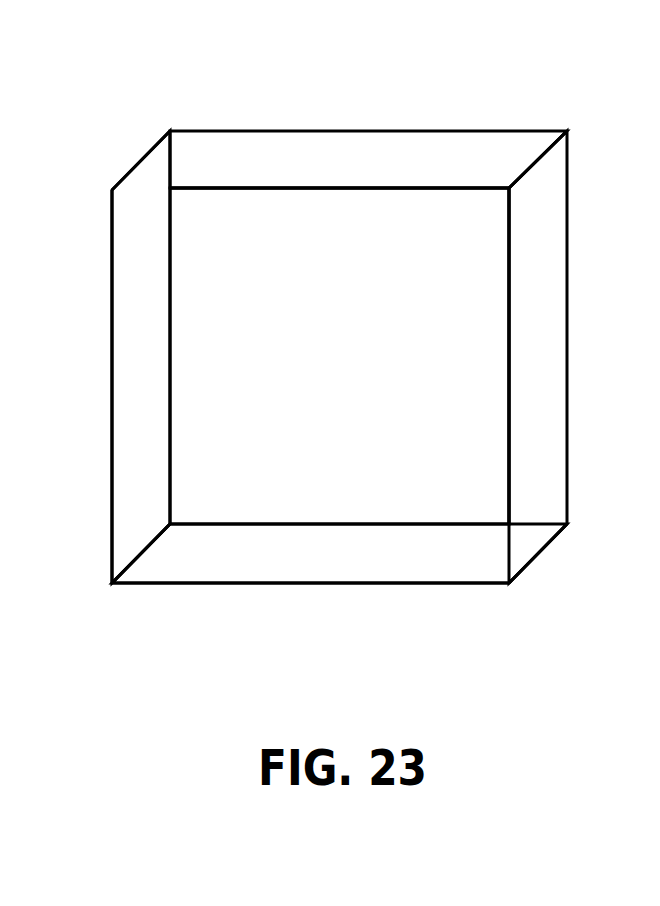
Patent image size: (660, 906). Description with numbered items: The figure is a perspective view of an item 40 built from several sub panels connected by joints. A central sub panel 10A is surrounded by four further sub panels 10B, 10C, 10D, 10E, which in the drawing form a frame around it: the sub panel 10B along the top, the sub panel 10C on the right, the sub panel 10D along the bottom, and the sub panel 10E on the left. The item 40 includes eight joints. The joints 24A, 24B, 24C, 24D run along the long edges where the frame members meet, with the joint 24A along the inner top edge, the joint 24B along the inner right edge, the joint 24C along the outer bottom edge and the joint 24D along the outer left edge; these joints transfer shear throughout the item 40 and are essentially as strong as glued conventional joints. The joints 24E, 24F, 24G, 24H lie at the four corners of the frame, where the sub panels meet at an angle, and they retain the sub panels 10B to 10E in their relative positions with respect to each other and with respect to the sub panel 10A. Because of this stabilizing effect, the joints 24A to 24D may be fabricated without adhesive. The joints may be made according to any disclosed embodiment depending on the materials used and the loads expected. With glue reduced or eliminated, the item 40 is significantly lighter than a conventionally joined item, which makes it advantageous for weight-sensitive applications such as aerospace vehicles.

The item 40 is at (268, 68).
The sub panel 10A is at (358, 353).
The sub panel 10B is at (362, 171).
The sub panel 10C is at (567, 327).
The sub panel 10D is at (362, 560).
The sub panel 10E is at (170, 300).
The joint 24A is at (305, 190).
The joint 24B is at (498, 325).
The joint 24C is at (323, 583).
The joint 24D is at (102, 347).
The joint 24E is at (537, 160).
The joint 24F is at (545, 548).
The joint 24G is at (140, 555).
The joint 24H is at (137, 165).